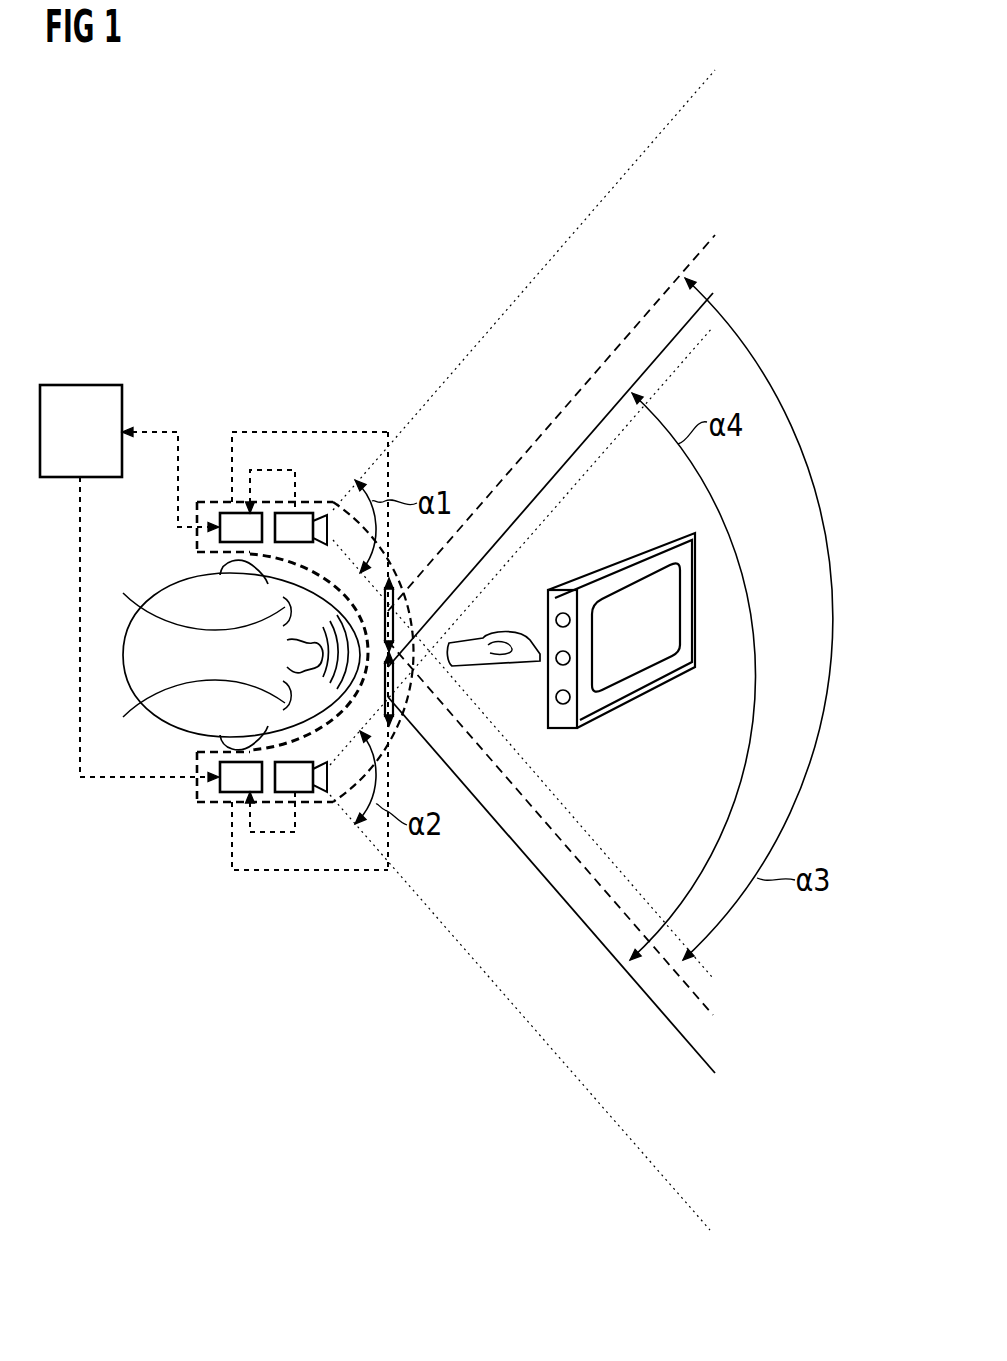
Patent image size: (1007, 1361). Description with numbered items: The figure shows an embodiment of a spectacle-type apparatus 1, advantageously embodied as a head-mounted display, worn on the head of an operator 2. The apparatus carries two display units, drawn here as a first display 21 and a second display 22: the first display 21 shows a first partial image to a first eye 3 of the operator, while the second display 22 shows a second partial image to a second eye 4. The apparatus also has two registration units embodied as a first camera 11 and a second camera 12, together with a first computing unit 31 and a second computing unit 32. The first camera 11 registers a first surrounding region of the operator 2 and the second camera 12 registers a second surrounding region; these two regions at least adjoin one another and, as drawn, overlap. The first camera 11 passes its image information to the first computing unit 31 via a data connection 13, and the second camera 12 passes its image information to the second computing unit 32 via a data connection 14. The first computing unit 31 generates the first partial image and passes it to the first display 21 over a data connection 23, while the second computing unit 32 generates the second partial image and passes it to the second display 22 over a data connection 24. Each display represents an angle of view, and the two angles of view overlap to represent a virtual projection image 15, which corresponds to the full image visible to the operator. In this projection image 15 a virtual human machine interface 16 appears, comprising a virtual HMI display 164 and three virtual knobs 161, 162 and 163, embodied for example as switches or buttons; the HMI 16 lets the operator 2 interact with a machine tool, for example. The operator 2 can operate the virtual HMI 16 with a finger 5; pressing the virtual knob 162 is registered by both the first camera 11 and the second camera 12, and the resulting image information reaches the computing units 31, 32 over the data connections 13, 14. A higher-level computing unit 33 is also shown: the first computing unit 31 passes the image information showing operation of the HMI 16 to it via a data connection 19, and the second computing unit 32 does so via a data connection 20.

The spectacle-type apparatus 1 is at (400, 550).
The operator 2 is at (124, 651).
The first eye 3 is at (222, 566).
The second eye 4 is at (222, 742).
The finger 5 is at (522, 662).
The first camera 11 is at (300, 513).
The second camera 12 is at (302, 792).
The data connection 13 is at (268, 470).
The data connection 14 is at (268, 832).
The projection image 15 is at (385, 1250).
The virtual human machine interface 16 is at (677, 672).
The data connection 19 is at (157, 430).
The data connection 20 is at (78, 538).
The first display 21 is at (394, 607).
The second display 22 is at (393, 690).
The data connection 23 is at (360, 430).
The data connection 24 is at (270, 873).
The first computing unit 31 is at (220, 524).
The second computing unit 32 is at (227, 783).
The higher-level computing unit 33 is at (80, 385).
The virtual knob 161 is at (564, 613).
The virtual knob 162 is at (577, 666).
The virtual knob 163 is at (564, 700).
The virtual HMI display 164 is at (662, 620).